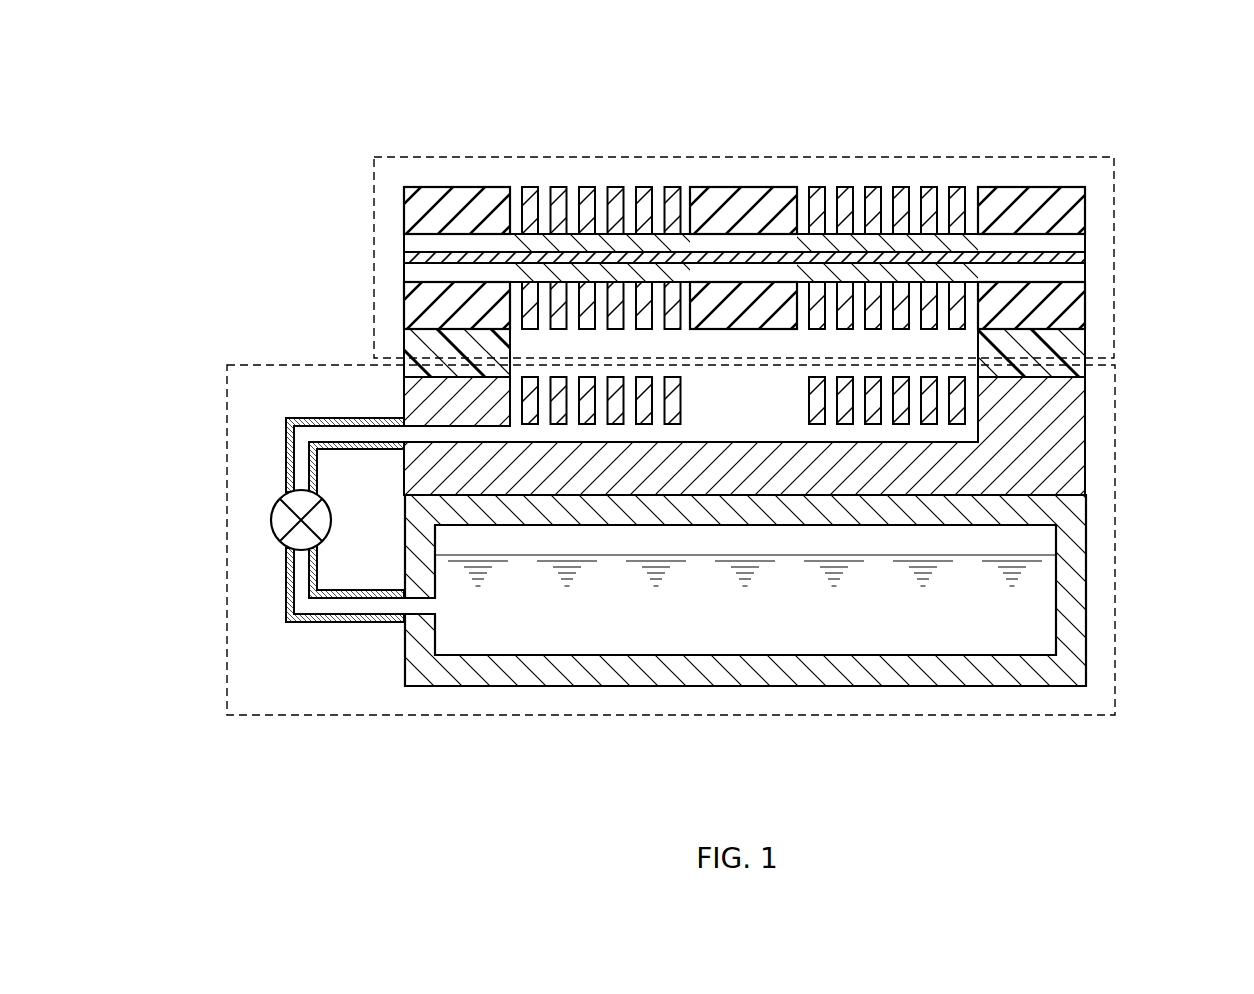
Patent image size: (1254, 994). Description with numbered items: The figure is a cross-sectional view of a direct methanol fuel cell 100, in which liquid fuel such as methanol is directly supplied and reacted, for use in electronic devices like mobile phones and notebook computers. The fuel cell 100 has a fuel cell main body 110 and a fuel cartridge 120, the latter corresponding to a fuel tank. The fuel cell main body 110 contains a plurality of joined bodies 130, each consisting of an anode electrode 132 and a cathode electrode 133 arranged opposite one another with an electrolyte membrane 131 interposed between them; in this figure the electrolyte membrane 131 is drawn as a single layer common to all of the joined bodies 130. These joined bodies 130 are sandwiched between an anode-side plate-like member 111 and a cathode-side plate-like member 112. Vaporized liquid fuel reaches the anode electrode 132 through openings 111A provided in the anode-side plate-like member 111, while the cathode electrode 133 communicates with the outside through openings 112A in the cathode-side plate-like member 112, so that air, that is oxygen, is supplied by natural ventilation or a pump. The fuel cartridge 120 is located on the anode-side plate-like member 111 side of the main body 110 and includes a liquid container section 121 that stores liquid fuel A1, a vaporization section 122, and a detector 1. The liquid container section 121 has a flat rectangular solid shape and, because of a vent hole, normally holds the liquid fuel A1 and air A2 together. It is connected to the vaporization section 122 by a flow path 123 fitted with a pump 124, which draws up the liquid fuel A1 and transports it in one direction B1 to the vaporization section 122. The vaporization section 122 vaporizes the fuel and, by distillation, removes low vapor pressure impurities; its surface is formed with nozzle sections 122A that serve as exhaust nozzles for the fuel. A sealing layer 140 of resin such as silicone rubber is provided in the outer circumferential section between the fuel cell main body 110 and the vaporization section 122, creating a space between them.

The fuel cell 100 is at (1108, 56).
The fuel cell main body 110 is at (741, 157).
The anode-side plate-like member 111 is at (1058, 308).
The openings 111A is at (930, 339).
The cathode-side plate-like member 112 is at (1073, 212).
The openings 112A is at (896, 176).
The joined body 130 is at (827, 274).
The electrolyte membrane 131 is at (1060, 258).
The anode electrode 132 is at (978, 276).
The cathode electrode 133 is at (978, 247).
The sealing layer 140 is at (430, 345).
The fuel cartridge 120 is at (1117, 660).
The liquid container section 121 is at (1074, 585).
The vaporization section 122 is at (1065, 448).
The nozzle section 122A is at (950, 403).
The flow path 123 is at (343, 622).
The pump 124 is at (285, 490).
The detector 1 is at (556, 678).
The liquid fuel A1 is at (699, 614).
The air A2 is at (998, 553).
The one direction B1 is at (267, 502).